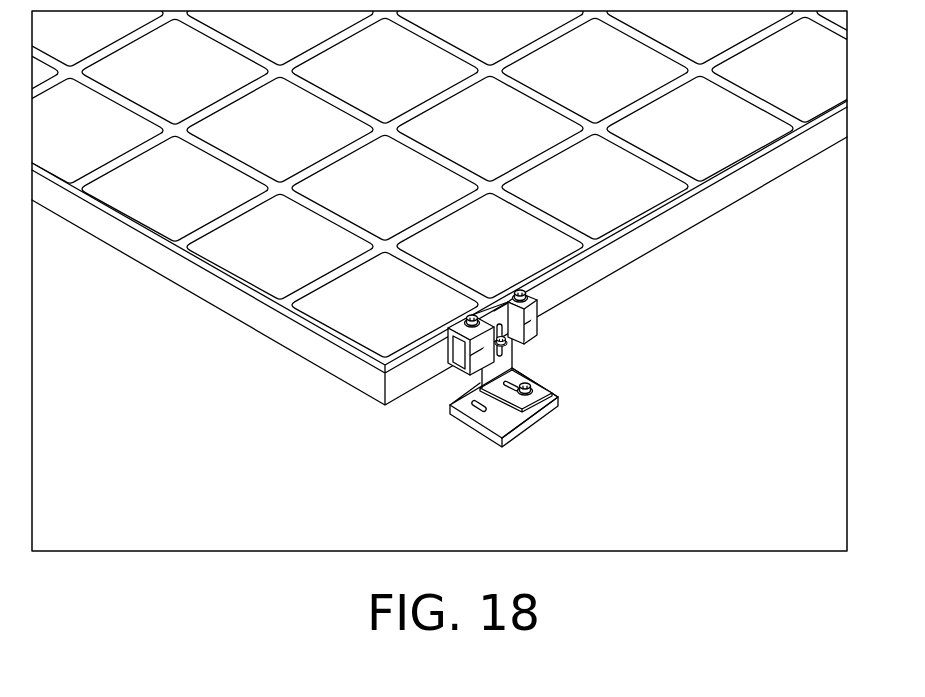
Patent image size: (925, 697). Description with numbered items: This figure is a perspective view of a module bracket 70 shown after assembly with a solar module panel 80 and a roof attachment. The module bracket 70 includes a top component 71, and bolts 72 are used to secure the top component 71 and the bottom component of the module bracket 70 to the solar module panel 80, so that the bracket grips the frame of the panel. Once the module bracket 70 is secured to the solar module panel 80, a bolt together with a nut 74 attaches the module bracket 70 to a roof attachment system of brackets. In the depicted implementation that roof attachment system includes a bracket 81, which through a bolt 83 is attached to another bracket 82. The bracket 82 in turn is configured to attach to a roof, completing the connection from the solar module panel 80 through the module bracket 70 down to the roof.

The module bracket 70 is at (460, 372).
The top component 71 is at (534, 320).
The bolts 72 is at (476, 317).
The nut 74 is at (508, 344).
The solar module panel 80 is at (289, 335).
The bracket 81 is at (510, 378).
The bracket 82 is at (508, 430).
The bolt 83 is at (543, 398).